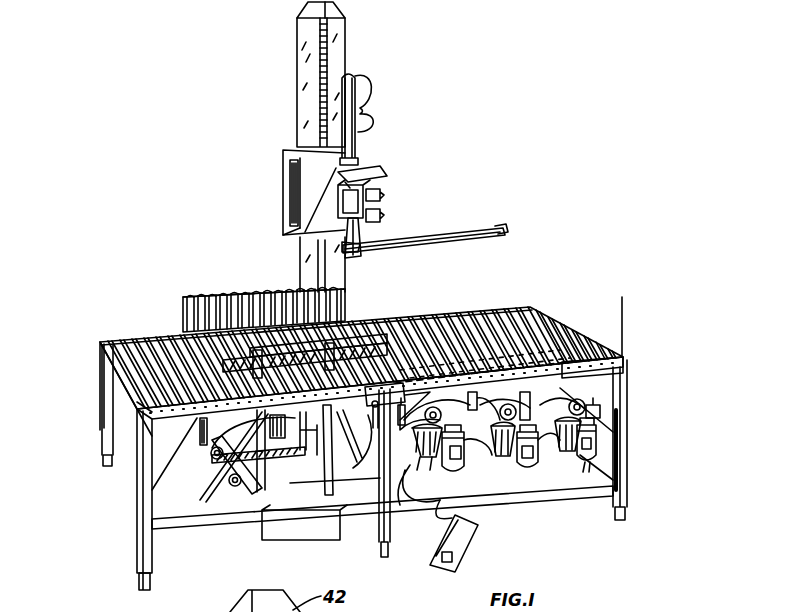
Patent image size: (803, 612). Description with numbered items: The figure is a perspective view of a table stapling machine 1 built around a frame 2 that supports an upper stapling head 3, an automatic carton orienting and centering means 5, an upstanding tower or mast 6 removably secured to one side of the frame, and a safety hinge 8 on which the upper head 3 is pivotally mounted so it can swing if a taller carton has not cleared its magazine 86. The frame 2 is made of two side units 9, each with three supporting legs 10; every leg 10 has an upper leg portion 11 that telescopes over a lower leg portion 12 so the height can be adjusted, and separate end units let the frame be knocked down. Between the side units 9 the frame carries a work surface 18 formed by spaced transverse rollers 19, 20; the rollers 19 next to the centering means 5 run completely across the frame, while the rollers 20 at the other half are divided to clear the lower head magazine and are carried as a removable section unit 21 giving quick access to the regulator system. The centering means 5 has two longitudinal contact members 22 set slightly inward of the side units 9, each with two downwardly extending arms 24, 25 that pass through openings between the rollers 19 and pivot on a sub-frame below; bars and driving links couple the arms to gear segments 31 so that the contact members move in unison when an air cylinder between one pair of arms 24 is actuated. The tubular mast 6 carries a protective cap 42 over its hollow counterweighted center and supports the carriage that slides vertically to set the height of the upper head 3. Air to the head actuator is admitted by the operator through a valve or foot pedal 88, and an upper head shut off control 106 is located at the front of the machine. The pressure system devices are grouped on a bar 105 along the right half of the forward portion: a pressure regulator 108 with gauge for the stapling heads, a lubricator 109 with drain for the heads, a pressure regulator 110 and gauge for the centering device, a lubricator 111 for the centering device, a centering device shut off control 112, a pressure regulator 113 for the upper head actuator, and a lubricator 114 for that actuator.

The table stapling machine 1 is at (559, 296).
The frame 2 is at (83, 385).
The upper stapling head 3 is at (403, 209).
The automatic carton orienting and centering means 5 is at (200, 284).
The upstanding tower or mast 6 is at (348, 45).
The safety hinge 8 is at (344, 184).
The side unit 9 is at (131, 405).
The supporting leg 10 is at (142, 498).
The upper leg portion 11 is at (142, 523).
The lower leg portion 12 is at (140, 584).
The work surface 18 is at (92, 355).
The rollers 19 is at (152, 340).
The rollers 20 is at (483, 312).
The removable section unit 21 is at (548, 348).
The longitudinal contact member 22 is at (272, 290).
The downwardly extending arm 24 is at (321, 482).
The downwardly extending arm 25 is at (212, 446).
The gear segment 31 is at (222, 462).
The protective cap 42 is at (338, 12).
The magazine 86 is at (445, 237).
The foot pedal 88 is at (466, 556).
The bar 105 is at (597, 412).
The upper head shut off control 106 is at (402, 406).
The pressure regulator 108 is at (425, 465).
The lubricator 109 is at (463, 466).
The pressure regulator 110 is at (505, 458).
The lubricator 111 is at (530, 470).
The centering device shut off control 112 is at (545, 465).
The pressure regulator 113 is at (556, 460).
The lubricator 114 is at (596, 440).